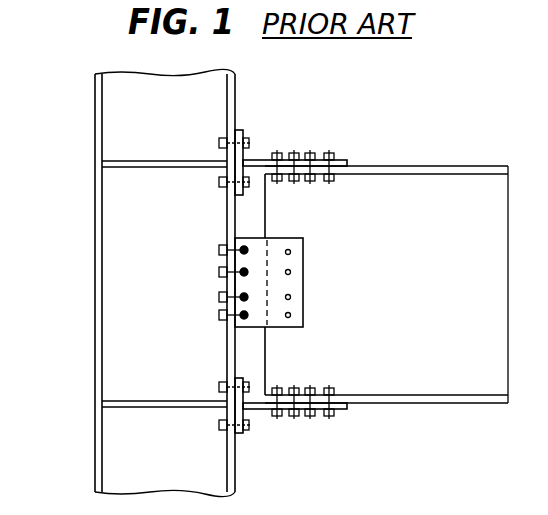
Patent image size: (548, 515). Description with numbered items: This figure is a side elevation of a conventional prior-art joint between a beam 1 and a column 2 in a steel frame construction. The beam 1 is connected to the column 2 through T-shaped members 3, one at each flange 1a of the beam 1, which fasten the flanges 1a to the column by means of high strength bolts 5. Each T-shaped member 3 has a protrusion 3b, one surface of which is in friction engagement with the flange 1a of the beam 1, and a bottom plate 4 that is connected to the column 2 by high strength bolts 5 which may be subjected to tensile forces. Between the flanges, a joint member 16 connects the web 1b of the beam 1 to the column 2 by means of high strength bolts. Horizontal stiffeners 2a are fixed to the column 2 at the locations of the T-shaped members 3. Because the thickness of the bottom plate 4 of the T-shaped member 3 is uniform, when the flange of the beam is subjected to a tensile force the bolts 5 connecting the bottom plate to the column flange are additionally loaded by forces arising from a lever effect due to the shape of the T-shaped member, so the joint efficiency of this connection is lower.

The beam 1 is at (386, 291).
The flange 1a is at (473, 166).
The web 1b is at (448, 383).
The column 2 is at (122, 132).
The horizontal stiffener 2a is at (143, 167).
The T-shaped member 3 is at (314, 286).
The protrusion 3b is at (347, 158).
The bottom plate 4 is at (282, 133).
The high strength bolt 5 is at (292, 152).
The joint member 16 is at (300, 252).